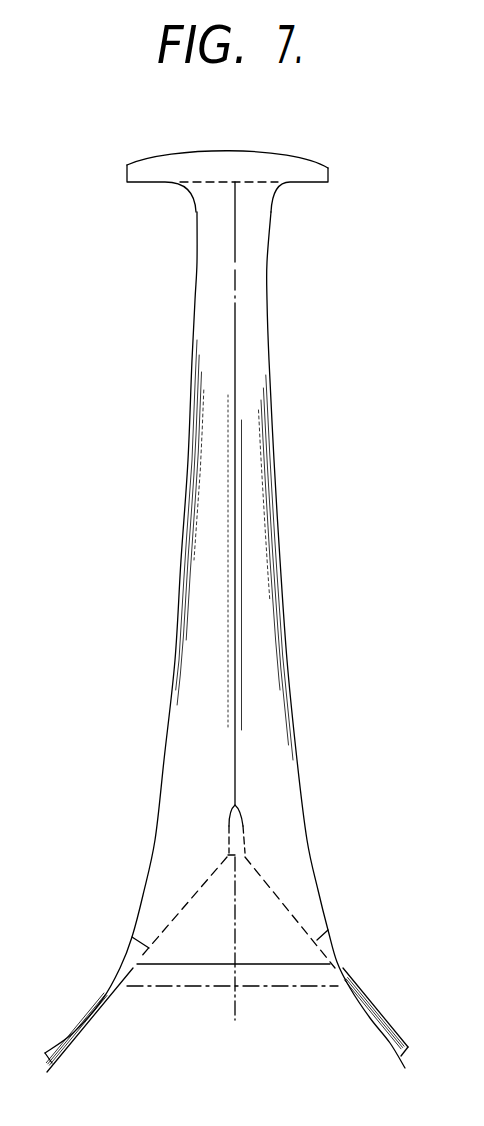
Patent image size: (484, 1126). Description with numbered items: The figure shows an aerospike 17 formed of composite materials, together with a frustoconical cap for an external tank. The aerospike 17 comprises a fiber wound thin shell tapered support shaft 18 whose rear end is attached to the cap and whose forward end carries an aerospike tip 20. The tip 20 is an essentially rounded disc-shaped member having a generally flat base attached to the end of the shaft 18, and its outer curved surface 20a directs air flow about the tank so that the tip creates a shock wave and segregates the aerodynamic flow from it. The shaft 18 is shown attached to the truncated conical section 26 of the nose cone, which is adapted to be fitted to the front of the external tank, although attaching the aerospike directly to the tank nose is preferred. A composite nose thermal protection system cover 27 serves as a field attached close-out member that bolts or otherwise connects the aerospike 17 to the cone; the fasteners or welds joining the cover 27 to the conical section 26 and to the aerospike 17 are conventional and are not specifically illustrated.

The aerospike 17 is at (226, 590).
The tapered support shaft 18 is at (192, 575).
The aerospike tip 20 is at (255, 160).
The outer curved surface 20a is at (307, 160).
The conical section 26 is at (261, 893).
The thermal protection system cover 27 is at (93, 1003).